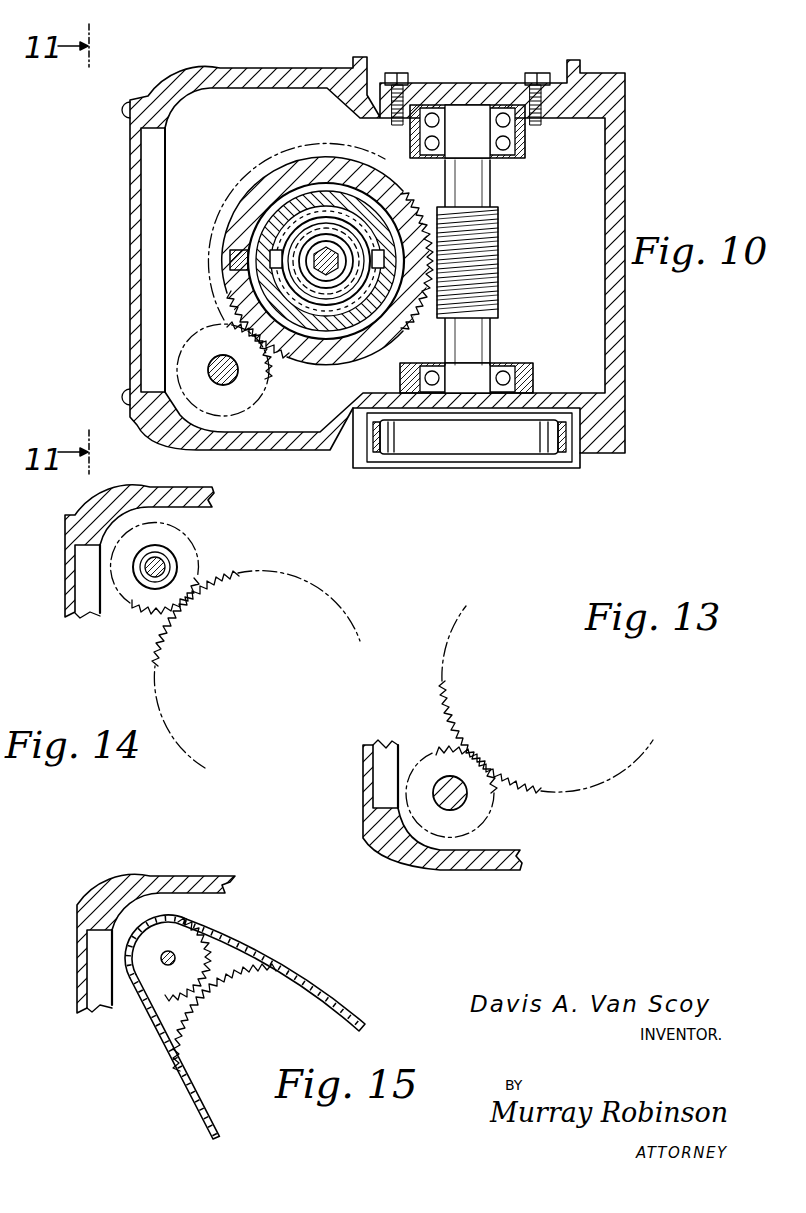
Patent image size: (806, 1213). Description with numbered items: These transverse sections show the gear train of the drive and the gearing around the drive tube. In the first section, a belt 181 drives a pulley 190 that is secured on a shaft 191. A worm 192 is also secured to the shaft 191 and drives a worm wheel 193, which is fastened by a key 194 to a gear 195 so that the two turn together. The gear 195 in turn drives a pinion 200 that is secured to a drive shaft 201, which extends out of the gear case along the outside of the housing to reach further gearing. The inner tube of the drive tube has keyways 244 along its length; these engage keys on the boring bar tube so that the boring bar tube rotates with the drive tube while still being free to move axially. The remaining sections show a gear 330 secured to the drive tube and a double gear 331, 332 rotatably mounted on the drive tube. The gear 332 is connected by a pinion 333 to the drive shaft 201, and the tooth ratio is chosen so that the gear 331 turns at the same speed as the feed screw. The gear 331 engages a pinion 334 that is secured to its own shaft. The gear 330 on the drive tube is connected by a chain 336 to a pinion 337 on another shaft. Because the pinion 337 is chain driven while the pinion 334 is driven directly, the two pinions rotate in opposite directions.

In FIG. 10, the belt 181 is at (560, 440).
In FIG. 10, the pulley 190 is at (445, 440).
In FIG. 10, the shaft 191 is at (463, 372).
In FIG. 10, the worm 192 is at (500, 280).
In FIG. 10, the worm wheel 193 is at (291, 161).
In FIG. 10, the key 194 is at (230, 261).
In FIG. 10, the gear 195 is at (240, 320).
In FIG. 10, the pinion 200 is at (248, 410).
In FIG. 10, the drive shaft 201 is at (233, 376).
In FIG. 14, the drive shaft 201 is at (437, 783).
In FIG. 10, the keyways 244 is at (278, 250).
In FIG. 13, the gear 331 is at (312, 598).
In FIG. 14, the gear 332 is at (592, 770).
In FIG. 14, the pinion 333 is at (479, 809).
In FIG. 13, the pinion 334 is at (189, 573).
In FIG. 15, the chain 336 is at (243, 940).
In FIG. 15, the pinion 337 is at (163, 977).
In FIG. 15, the gear 330 is at (260, 1022).